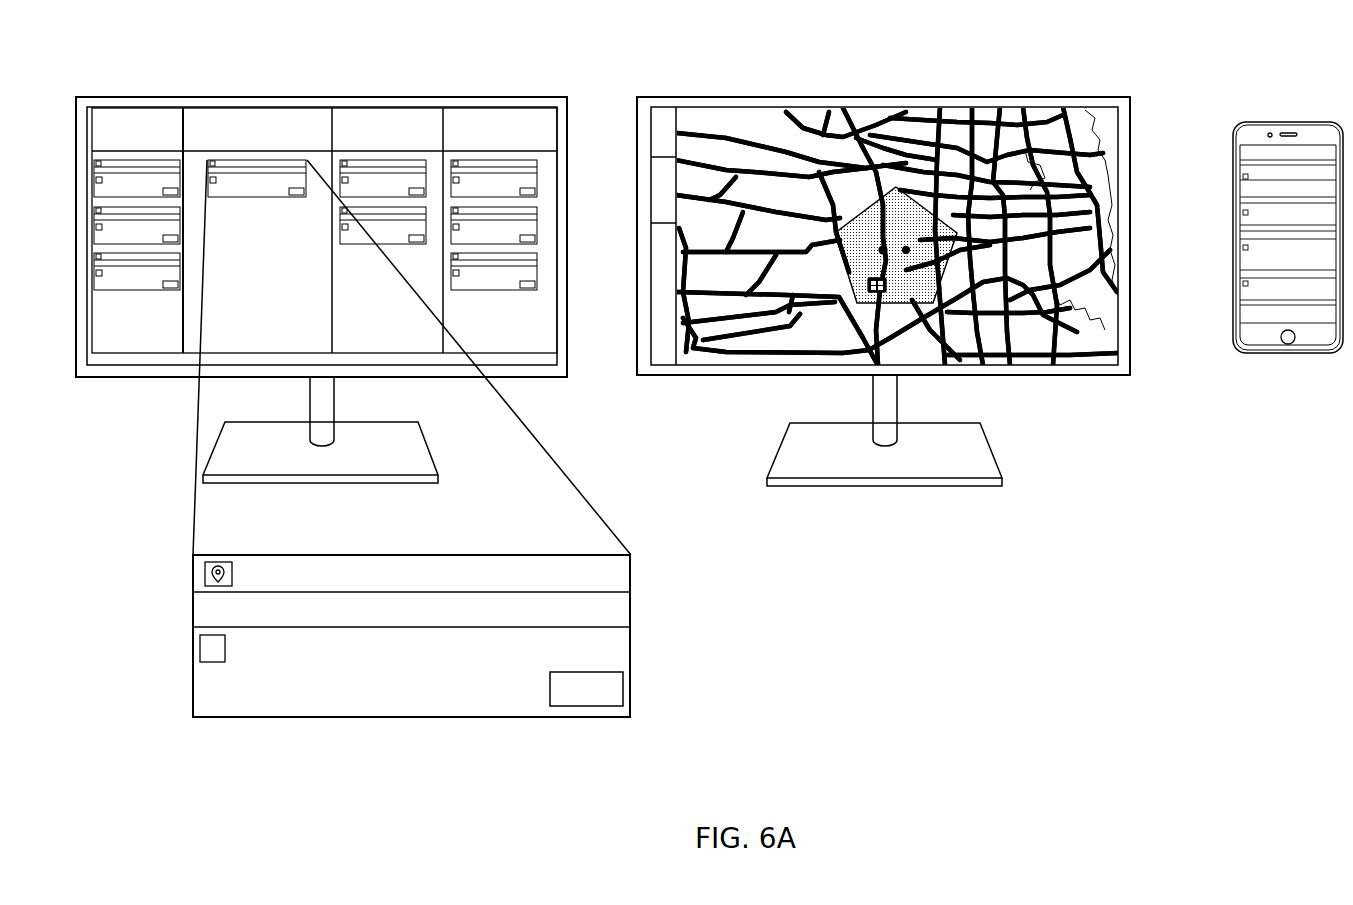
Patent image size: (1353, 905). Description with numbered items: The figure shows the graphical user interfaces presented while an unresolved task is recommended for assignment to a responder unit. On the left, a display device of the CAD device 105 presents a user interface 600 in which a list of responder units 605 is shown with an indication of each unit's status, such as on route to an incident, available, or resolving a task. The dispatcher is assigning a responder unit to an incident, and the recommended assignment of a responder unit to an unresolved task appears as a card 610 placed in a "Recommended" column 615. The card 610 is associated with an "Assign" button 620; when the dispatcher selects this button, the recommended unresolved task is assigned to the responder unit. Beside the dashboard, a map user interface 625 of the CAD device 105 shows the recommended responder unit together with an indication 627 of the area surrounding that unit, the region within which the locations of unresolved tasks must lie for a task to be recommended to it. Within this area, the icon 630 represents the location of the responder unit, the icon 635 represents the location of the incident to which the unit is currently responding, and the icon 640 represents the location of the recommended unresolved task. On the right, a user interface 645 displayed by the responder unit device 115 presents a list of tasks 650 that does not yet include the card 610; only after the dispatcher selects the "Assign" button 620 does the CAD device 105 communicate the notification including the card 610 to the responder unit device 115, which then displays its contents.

The CAD device 105 is at (120, 522).
The responder unit device 115 is at (1293, 384).
The user interface 600 is at (82, 96).
The list of responder units 605 is at (148, 149).
The card 610 is at (318, 552).
The "Recommended" column 615 is at (246, 149).
The "Assign" button 620 is at (626, 690).
The map user interface 625 is at (722, 360).
The indication of an area surrounding the responder unit 627 is at (836, 228).
The icon 630 is at (882, 238).
The icon 635 is at (912, 255).
The icon 640 is at (865, 290).
The user interface 645 is at (1238, 312).
The list of tasks 650 is at (1288, 150).